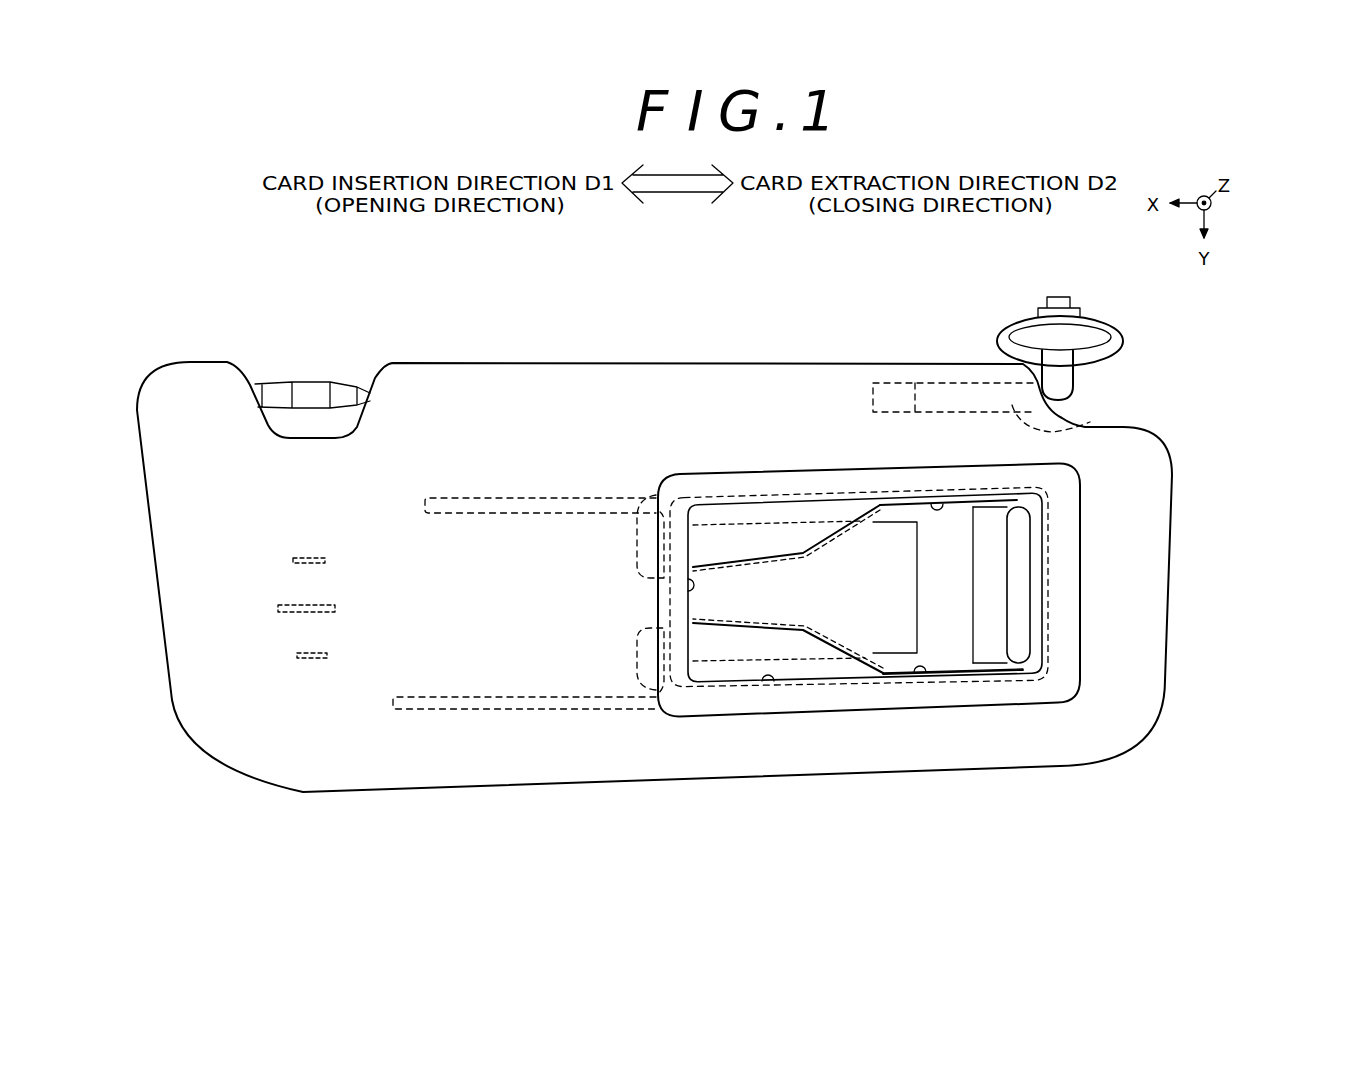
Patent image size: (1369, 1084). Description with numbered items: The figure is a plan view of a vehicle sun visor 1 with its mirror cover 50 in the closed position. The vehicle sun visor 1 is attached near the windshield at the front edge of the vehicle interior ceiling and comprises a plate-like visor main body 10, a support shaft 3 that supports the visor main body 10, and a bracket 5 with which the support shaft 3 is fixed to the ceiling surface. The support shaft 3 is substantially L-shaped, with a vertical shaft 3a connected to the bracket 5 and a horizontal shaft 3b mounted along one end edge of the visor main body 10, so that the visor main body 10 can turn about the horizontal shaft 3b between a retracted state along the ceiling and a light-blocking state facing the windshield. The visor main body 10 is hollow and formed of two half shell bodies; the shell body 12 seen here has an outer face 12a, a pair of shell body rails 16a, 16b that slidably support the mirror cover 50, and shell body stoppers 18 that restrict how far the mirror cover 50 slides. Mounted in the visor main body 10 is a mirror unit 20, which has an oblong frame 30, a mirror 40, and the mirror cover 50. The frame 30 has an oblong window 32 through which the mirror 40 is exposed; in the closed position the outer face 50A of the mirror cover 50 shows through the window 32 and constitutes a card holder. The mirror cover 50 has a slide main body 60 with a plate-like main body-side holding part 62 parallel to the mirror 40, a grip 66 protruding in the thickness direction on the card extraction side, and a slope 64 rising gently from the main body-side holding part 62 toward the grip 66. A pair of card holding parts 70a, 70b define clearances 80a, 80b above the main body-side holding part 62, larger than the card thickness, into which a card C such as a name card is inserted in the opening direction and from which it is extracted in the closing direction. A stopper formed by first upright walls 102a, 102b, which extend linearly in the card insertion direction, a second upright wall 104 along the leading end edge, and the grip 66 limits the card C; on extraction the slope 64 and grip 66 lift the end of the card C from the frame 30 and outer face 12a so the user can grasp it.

The vehicle sun visor 1 is at (1191, 314).
The support shaft 3 is at (1184, 358).
The vertical shaft 3a is at (1063, 382).
The horizontal shaft 3b is at (1090, 422).
The bracket 5 is at (1113, 333).
The visor main body 10 is at (1172, 481).
The shell body 12 is at (1160, 513).
The outer face of the shell body 12a is at (1150, 547).
The shell body rail 16a is at (527, 500).
The shell body rail 16b is at (508, 700).
The shell body stoppers 18 is at (298, 655).
The mirror unit 20 is at (912, 825).
The frame 30 is at (1001, 705).
The window 32 is at (778, 683).
The mirror 40 is at (960, 660).
The mirror cover 50 is at (947, 655).
The outer face of the mirror cover 50A is at (893, 662).
The slide main body 60 is at (1284, 555).
The main body-side holding part 62 is at (955, 622).
The slope 64 is at (993, 595).
The grip 66 is at (1027, 563).
The card holding part 70a is at (748, 517).
The card holding part 70b is at (735, 672).
The clearance 80a is at (810, 553).
The clearance 80b is at (818, 631).
The first upright wall 102a is at (932, 502).
The first upright wall 102b is at (912, 670).
The second upright wall 104 is at (690, 585).
The card C is at (913, 550).